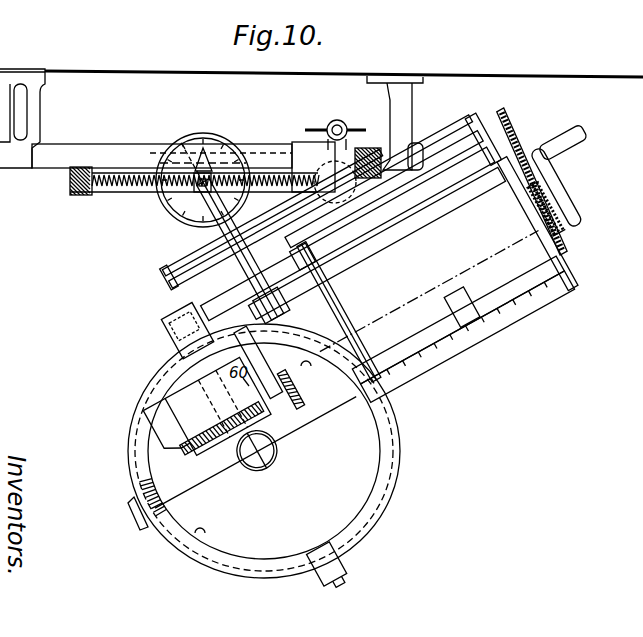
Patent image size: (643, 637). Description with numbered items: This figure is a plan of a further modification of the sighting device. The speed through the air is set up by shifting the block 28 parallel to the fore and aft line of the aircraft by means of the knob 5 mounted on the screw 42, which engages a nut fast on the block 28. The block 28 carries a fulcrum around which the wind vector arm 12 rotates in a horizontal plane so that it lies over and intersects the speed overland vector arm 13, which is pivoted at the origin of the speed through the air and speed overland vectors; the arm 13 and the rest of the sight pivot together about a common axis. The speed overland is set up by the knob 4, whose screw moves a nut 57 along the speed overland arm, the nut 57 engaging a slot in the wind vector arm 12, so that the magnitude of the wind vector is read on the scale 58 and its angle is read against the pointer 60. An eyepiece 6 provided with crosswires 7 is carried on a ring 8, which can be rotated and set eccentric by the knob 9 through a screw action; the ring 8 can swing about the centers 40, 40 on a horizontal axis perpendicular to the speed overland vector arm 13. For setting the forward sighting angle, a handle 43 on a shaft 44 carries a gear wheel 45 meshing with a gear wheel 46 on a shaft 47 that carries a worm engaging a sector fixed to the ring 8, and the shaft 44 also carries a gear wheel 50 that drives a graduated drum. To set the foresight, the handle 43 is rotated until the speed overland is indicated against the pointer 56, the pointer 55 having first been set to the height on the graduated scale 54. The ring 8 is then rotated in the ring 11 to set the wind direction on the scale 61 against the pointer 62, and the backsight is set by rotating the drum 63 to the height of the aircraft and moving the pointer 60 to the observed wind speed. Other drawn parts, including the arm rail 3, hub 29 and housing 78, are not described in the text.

The arm rail 3 is at (404, 214).
The knob 4 is at (400, 140).
The knob 5 is at (75, 193).
The eyepiece 6 is at (278, 452).
The crosswires 7 is at (259, 466).
The ring 8 is at (133, 462).
The knob 9 is at (303, 407).
The ring 11 is at (135, 479).
The wind vector arm 12 is at (280, 304).
The speed overland vector arm 13 is at (163, 270).
The block 28 is at (229, 228).
The hub 29 is at (196, 190).
The centers 40 is at (167, 300).
The screw 42 is at (123, 183).
The handle 43 is at (580, 137).
The shaft 44 is at (557, 191).
The gear wheel 45 is at (550, 176).
The gear wheel 46 is at (503, 112).
The shaft 47 is at (517, 137).
The gear wheel 50 is at (182, 150).
The graduated scale 54 is at (457, 357).
The pointer 55 is at (490, 333).
The pointer 56 is at (450, 290).
The nut 57 is at (318, 255).
The scale 58 is at (323, 277).
The pointer 60 is at (207, 163).
The scale 61 is at (167, 503).
The pointer 62 is at (158, 503).
The drum 63 is at (221, 418).
The housing 78 is at (236, 160).